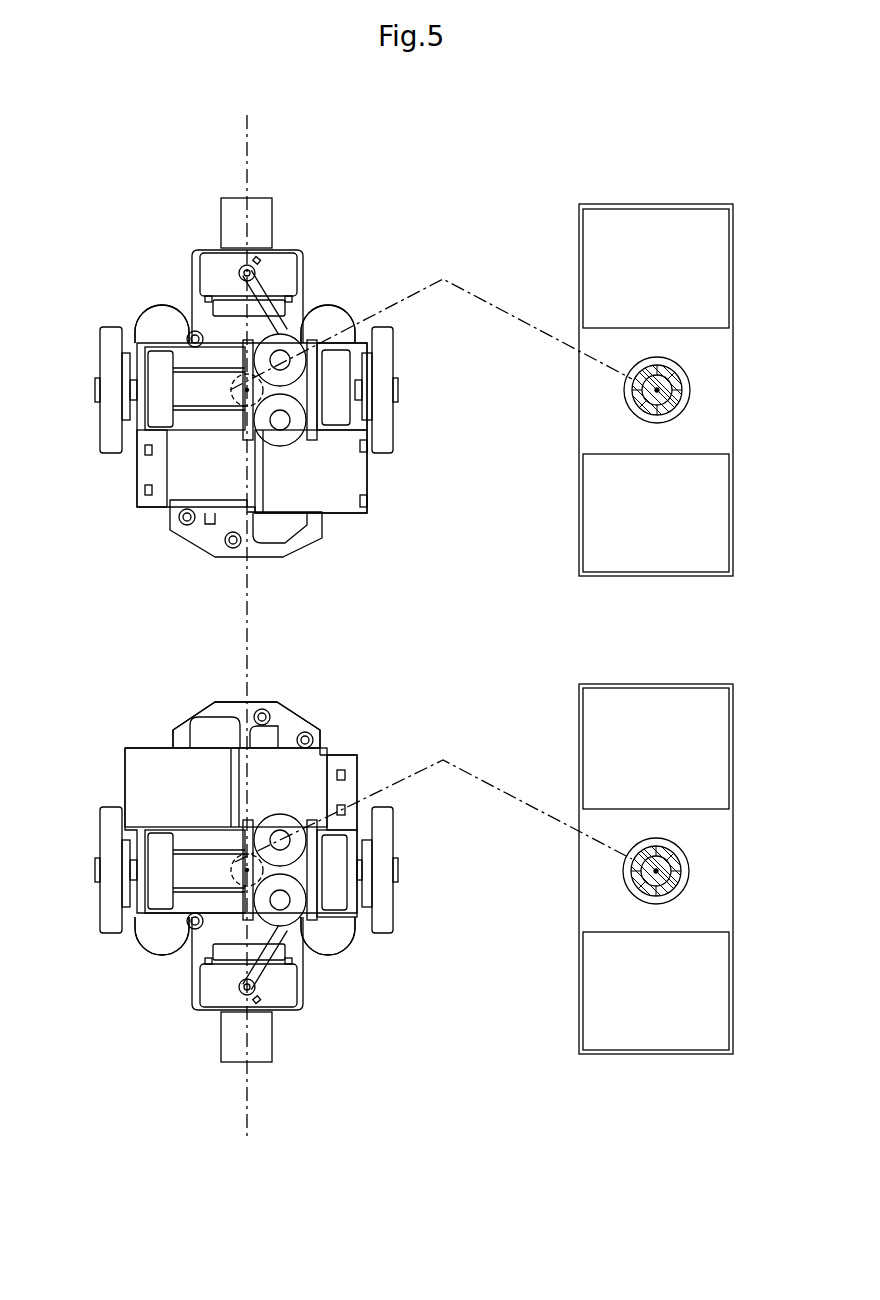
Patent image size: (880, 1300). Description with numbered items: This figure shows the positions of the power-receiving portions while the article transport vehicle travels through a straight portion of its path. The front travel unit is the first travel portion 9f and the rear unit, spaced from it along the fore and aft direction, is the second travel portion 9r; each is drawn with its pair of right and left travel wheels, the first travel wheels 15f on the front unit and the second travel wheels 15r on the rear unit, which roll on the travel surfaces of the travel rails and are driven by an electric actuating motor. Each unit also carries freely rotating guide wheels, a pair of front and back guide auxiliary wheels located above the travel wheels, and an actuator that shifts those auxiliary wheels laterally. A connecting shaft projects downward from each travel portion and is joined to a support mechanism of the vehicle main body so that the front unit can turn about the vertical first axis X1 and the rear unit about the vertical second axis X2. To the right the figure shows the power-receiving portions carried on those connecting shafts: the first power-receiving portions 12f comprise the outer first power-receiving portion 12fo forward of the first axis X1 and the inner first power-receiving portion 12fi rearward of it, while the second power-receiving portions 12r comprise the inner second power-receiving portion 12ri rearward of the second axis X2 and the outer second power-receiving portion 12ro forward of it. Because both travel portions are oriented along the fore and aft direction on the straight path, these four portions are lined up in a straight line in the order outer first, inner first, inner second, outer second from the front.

The first travel portion 9f is at (131, 205).
The second travel portion 9r is at (133, 1055).
The first travel wheel 15f is at (107, 433).
The second travel wheel 15r is at (107, 835).
The first axis X1 is at (243, 403).
The second axis X2 is at (245, 866).
The first power-receiving portion 12f is at (699, 389).
The second power-receiving portion 12r is at (642, 883).
The outer first power-receiving portion 12fo is at (665, 222).
The inner first power-receiving portion 12fi is at (694, 559).
The inner second power-receiving portion 12ri is at (647, 714).
The outer second power-receiving portion 12ro is at (625, 1028).